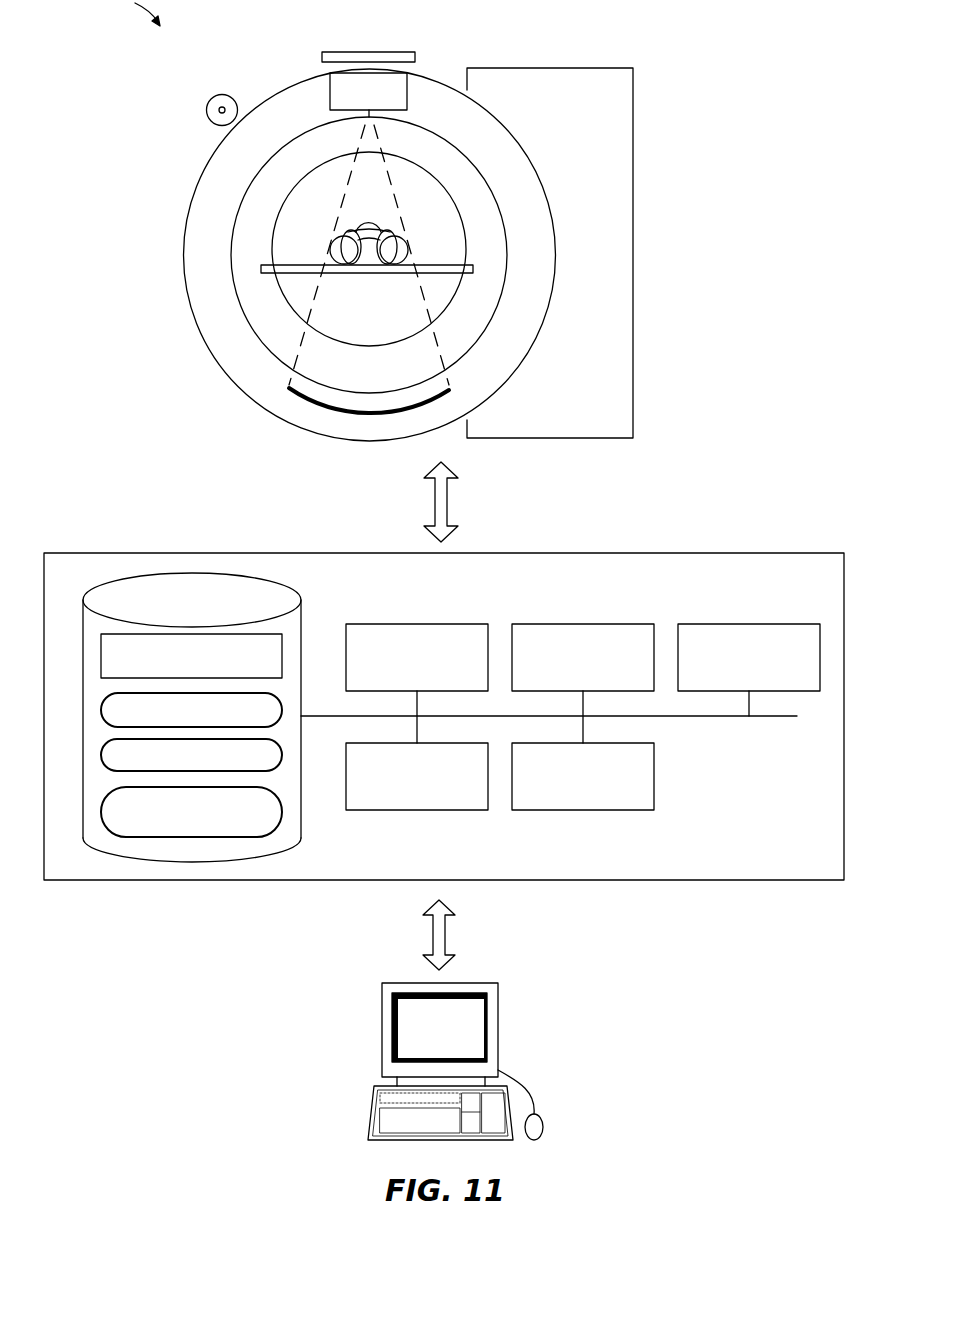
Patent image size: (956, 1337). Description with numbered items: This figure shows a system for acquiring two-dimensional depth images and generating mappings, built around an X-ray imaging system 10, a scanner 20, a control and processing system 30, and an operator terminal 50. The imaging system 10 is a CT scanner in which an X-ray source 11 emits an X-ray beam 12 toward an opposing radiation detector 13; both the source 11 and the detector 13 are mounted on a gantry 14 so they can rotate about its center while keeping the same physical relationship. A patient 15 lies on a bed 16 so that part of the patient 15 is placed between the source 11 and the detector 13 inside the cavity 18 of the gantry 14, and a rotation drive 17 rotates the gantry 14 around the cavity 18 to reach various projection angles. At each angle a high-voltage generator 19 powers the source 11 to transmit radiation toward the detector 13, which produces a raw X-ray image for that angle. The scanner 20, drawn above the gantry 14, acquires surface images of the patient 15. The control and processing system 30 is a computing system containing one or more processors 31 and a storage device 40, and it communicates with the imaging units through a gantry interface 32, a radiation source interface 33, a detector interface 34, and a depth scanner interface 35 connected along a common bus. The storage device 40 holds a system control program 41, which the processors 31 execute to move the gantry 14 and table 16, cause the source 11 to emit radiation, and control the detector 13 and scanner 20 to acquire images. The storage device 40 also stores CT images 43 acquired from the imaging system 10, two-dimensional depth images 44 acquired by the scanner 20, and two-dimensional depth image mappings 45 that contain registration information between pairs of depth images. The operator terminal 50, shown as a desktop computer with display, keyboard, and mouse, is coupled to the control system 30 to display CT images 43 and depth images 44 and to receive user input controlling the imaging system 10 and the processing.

The X-ray imaging system 10 is at (291, 38).
The X-ray source 11 is at (330, 106).
The X-ray beam 12 is at (379, 150).
The radiation detector 13 is at (342, 415).
The gantry 14 is at (427, 81).
The patient 15 is at (396, 237).
The bed 16 is at (359, 274).
The rotation drive 17 is at (207, 111).
The cavity 18 is at (284, 229).
The high-voltage generator 19 is at (633, 88).
The scanner 20 is at (384, 52).
The control and processing system 30 is at (697, 552).
The processors 31 is at (451, 743).
The gantry interface 32 is at (448, 624).
The radiation source interface 33 is at (618, 624).
The detector interface 34 is at (611, 743).
The depth scanner interface 35 is at (784, 624).
The storage device 40 is at (276, 590).
The system control program 41 is at (101, 659).
The CT images 43 is at (101, 713).
The two-dimensional depth images 44 is at (101, 757).
The two-dimensional depth image mappings 45 is at (101, 805).
The operator terminal 50 is at (541, 1036).